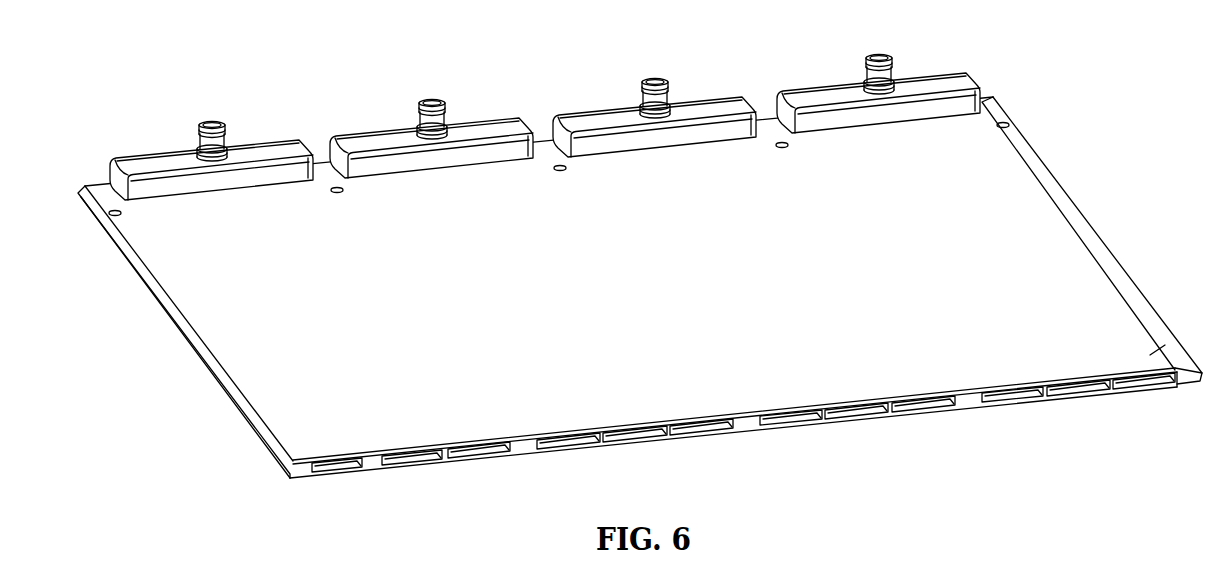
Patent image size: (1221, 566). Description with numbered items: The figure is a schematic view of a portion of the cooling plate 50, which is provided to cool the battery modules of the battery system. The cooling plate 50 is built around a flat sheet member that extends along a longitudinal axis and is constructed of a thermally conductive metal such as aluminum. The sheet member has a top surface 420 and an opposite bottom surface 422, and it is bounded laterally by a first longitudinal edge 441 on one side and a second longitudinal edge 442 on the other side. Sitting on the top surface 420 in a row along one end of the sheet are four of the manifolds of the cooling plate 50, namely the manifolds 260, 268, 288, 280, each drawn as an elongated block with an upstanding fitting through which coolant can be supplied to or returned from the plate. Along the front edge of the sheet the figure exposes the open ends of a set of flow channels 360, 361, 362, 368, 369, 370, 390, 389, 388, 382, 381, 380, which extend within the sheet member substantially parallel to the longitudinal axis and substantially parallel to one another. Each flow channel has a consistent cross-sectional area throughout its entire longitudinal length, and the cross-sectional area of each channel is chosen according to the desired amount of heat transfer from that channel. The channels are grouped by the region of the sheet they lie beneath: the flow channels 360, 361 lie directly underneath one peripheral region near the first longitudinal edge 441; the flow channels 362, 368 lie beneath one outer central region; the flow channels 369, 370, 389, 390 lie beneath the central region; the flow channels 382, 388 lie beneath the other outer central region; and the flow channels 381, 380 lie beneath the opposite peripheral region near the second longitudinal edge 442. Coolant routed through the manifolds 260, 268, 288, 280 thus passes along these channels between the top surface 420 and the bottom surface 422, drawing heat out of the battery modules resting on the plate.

The cooling plate 50 is at (1052, 116).
The manifold 260 is at (146, 160).
The manifold 268 is at (368, 138).
The manifold 288 is at (591, 115).
The manifold 280 is at (811, 92).
The first longitudinal edge 441 is at (195, 350).
The second longitudinal edge 442 is at (1097, 233).
The top surface 420 is at (1150, 355).
The bottom surface 422 is at (1176, 388).
The flow channel 360 is at (350, 472).
The flow channel 361 is at (416, 465).
The flow channel 362 is at (483, 458).
The flow channel 368 is at (573, 449).
The flow channel 369 is at (640, 442).
The flow channel 370 is at (703, 435).
The flow channel 390 is at (793, 425).
The flow channel 389 is at (860, 419).
The flow channel 388 is at (925, 412).
The flow channel 382 is at (1017, 402).
The flow channel 381 is at (1083, 396).
The flow channel 380 is at (1150, 389).